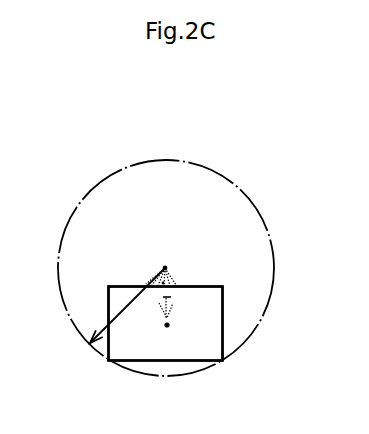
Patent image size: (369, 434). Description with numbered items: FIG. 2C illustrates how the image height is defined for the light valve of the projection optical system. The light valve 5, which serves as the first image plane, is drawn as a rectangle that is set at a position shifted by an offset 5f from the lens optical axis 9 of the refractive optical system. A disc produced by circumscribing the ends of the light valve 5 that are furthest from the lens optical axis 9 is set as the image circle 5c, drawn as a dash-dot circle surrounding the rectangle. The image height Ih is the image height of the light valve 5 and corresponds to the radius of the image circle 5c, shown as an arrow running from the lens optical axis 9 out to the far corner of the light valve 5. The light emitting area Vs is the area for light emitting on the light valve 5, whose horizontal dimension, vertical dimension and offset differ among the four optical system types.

The lens optical axis 9 is at (165, 268).
The offset 5f is at (167, 297).
The image circle 5c is at (268, 305).
The light valve 5 is at (223, 307).
The light emitting area Vs is at (223, 336).
The image height Ih is at (112, 308).